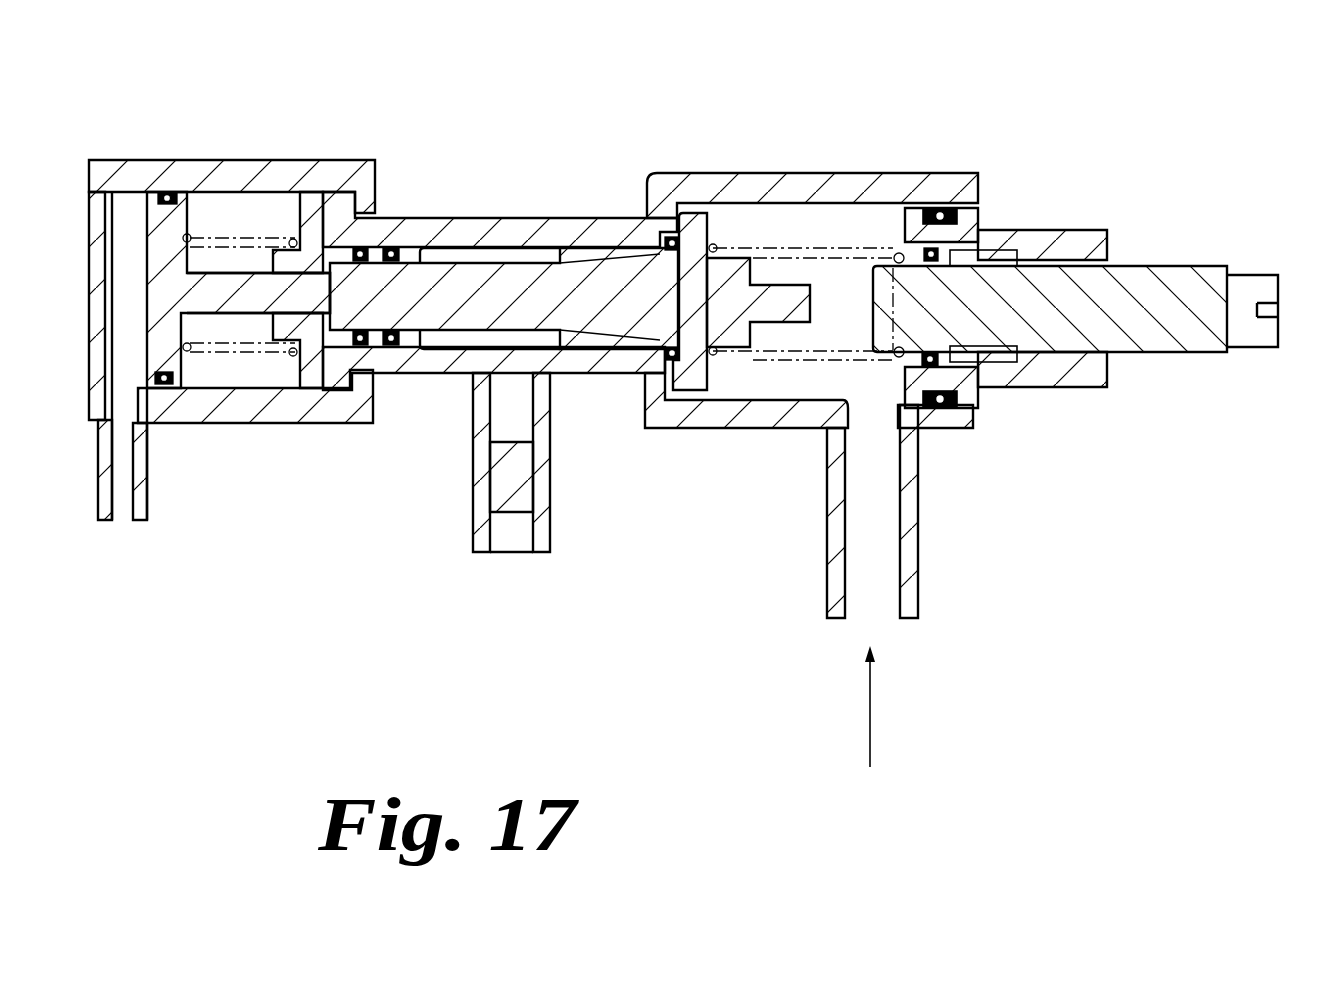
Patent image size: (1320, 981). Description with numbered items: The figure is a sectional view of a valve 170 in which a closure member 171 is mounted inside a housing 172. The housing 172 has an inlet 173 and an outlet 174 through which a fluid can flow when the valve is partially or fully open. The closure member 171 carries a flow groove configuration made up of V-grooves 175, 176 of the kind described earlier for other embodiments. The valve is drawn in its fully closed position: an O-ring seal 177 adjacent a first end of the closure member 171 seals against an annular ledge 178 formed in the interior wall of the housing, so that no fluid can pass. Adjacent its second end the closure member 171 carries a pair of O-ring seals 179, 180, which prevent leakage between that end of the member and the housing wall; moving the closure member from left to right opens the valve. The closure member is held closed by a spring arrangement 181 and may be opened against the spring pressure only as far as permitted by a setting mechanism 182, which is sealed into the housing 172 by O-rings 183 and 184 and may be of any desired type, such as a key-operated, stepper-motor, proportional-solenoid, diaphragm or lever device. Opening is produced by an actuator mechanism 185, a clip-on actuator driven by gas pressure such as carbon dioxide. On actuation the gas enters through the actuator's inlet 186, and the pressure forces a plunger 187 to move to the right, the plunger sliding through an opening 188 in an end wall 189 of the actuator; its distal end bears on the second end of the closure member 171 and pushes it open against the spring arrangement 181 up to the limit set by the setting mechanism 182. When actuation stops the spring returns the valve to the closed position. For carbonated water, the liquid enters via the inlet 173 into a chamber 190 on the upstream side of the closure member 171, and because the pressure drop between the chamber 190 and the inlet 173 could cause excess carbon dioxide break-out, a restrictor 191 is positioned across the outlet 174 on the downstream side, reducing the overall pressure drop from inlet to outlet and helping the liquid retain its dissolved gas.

The valve 170 is at (430, 208).
The closure member 171 is at (643, 280).
The housing 172 is at (893, 183).
The inlet 173 is at (896, 572).
The outlet 174 is at (475, 500).
The V-groove 175 is at (568, 246).
The V-groove 176 is at (573, 332).
The O-ring seal 177 is at (707, 392).
The annular ledge 178 is at (690, 362).
The O-ring seal 179 is at (361, 346).
The O-ring seal 180 is at (391, 346).
The spring arrangement 181 is at (788, 250).
The setting mechanism 182 is at (1150, 239).
The O-ring 183 is at (942, 204).
The O-ring 184 is at (940, 345).
The actuator mechanism 185 is at (162, 150).
The inlet 186 is at (122, 500).
The plunger 187 is at (210, 312).
The opening 188 is at (268, 308).
The end wall 189 is at (290, 213).
The chamber 190 is at (837, 222).
The restrictor 191 is at (508, 473).